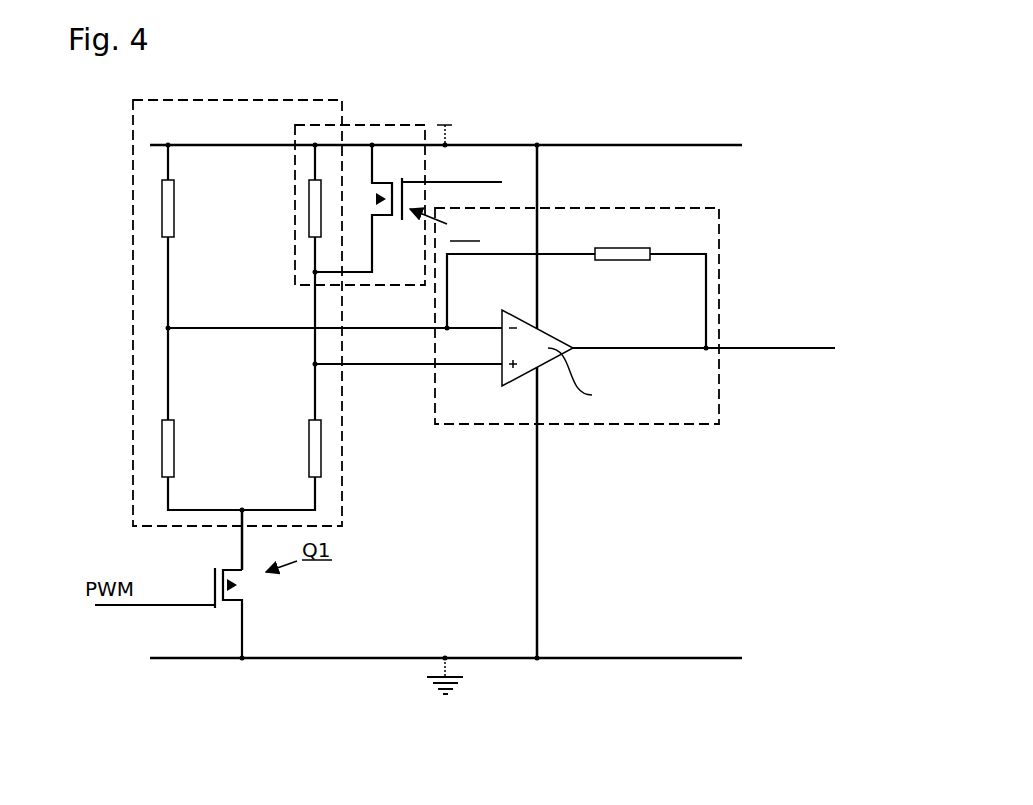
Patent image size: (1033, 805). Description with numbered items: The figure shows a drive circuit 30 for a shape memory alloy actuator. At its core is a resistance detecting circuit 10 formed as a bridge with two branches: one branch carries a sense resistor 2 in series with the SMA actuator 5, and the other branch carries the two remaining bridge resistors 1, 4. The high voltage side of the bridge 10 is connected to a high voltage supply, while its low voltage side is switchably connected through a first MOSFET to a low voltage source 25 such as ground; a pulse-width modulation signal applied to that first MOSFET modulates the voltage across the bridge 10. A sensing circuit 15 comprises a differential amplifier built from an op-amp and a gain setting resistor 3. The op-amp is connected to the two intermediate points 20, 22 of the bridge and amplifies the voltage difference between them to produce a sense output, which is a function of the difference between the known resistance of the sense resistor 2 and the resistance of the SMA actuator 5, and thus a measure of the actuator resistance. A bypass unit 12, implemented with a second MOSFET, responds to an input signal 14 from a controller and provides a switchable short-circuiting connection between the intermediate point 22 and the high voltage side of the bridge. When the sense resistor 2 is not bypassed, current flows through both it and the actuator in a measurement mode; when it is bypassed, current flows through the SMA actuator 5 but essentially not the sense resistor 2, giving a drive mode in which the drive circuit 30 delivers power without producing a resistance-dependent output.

The bridge resistor 1 is at (166, 225).
The sense resistor 2 is at (313, 205).
The gain setting resistor 3 is at (613, 248).
The bridge resistor 4 is at (166, 460).
The SMA actuator 5 is at (313, 445).
The resistance detecting circuit 10 is at (283, 335).
The bypass unit 12 is at (384, 180).
The input signal 14 is at (467, 181).
The sensing circuit 15 is at (637, 306).
The intermediate point 20 is at (166, 328).
The intermediate point 22 is at (313, 363).
The low voltage source 25 is at (323, 659).
The drive circuit 30 is at (783, 139).